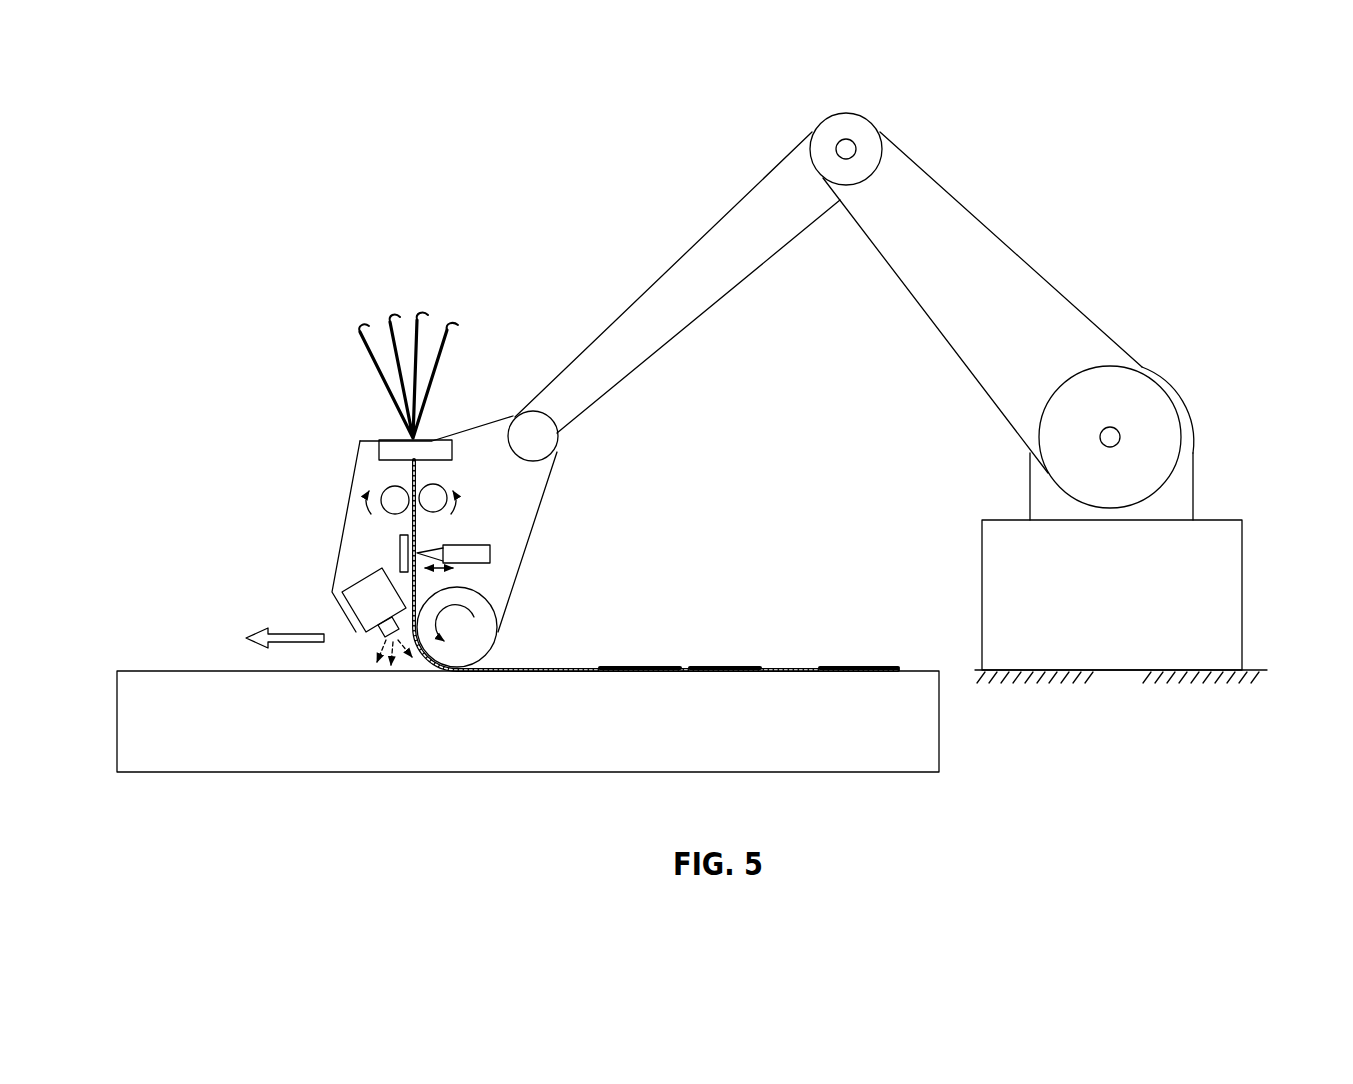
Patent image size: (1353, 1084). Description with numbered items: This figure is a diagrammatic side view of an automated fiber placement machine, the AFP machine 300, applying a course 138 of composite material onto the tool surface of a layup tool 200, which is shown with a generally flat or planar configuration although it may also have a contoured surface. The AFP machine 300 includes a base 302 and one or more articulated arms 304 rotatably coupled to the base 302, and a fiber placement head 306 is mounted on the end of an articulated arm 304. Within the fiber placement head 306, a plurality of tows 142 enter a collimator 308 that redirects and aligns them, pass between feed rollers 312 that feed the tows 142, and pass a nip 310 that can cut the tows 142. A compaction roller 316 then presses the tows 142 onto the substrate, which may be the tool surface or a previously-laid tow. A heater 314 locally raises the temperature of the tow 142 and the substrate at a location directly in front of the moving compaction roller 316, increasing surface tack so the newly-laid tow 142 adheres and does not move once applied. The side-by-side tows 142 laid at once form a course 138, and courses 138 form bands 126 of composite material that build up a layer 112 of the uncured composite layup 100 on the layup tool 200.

The composite layup 100 is at (779, 660).
The layer 112 is at (849, 661).
The band 126 is at (639, 665).
The course 138 is at (718, 665).
The tow 142 is at (440, 378).
The layup tool 200 is at (541, 740).
The AFP machine 300 is at (1186, 375).
The base 302 is at (1243, 607).
The articulated arm 304 is at (680, 262).
The fiber placement head 306 is at (335, 478).
The collimator 308 is at (391, 444).
The nip 310 is at (470, 546).
The feed roller 312 is at (438, 484).
The heater 314 is at (357, 588).
The compaction roller 316 is at (498, 647).